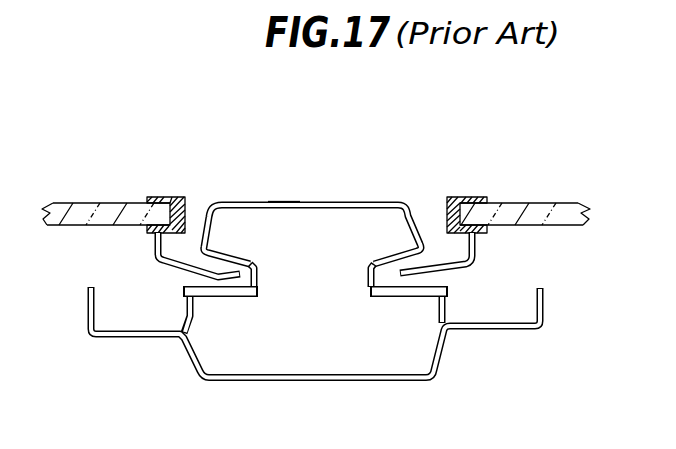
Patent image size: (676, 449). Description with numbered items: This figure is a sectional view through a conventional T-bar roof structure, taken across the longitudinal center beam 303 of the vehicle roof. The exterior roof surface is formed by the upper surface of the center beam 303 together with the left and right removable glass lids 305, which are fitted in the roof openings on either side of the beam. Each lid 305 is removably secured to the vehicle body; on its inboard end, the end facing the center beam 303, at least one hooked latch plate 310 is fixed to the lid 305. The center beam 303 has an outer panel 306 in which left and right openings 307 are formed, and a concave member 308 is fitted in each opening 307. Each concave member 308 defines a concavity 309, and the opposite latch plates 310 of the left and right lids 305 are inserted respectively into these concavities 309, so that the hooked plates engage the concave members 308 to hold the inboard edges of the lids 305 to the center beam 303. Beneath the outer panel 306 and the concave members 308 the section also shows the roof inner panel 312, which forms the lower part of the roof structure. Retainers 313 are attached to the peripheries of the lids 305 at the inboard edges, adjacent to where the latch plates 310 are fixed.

The longitudinal center beam 303 is at (337, 196).
The removable glass lid 305 is at (103, 203).
The outer panel 306 is at (283, 201).
The opening 307 is at (224, 242).
The concave member 308 is at (232, 297).
The concavity 309 is at (250, 297).
The hooked latch plate 310 is at (153, 263).
The roof inner panel 312 is at (427, 381).
The retainer 313 is at (180, 197).